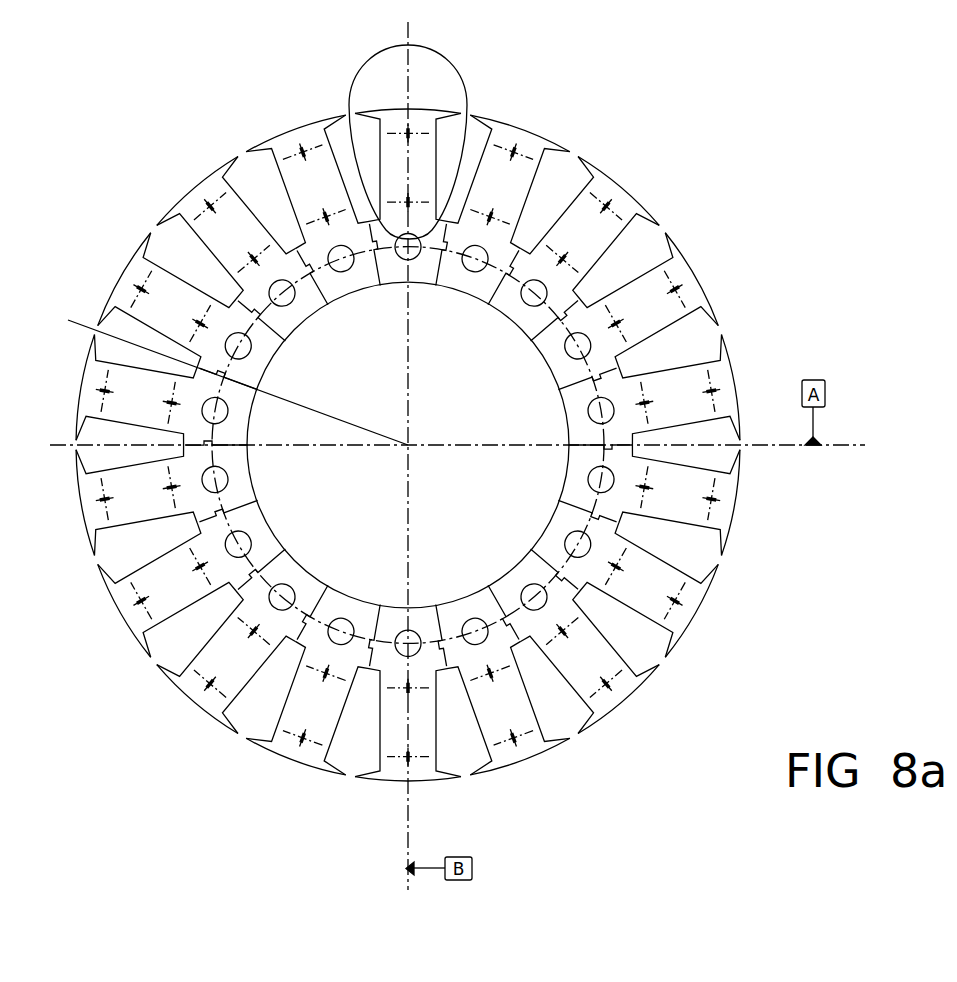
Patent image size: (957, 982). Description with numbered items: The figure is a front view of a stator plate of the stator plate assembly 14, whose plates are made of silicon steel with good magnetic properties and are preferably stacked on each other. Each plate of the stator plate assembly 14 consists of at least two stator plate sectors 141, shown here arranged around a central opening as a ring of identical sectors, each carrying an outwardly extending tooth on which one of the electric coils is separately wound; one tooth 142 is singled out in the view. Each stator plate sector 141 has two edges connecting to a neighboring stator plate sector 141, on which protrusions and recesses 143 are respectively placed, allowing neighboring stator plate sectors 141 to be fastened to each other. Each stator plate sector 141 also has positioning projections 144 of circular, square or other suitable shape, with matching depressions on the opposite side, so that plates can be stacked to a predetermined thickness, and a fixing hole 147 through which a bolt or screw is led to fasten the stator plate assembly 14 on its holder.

The stator plate assembly 14 is at (250, 120).
The stator plate sector 141 is at (615, 184).
The tooth 142 is at (421, 258).
The protrusions and recesses 143 is at (610, 301).
The positioning projections 144 is at (550, 272).
The fixing hole 147 is at (598, 333).